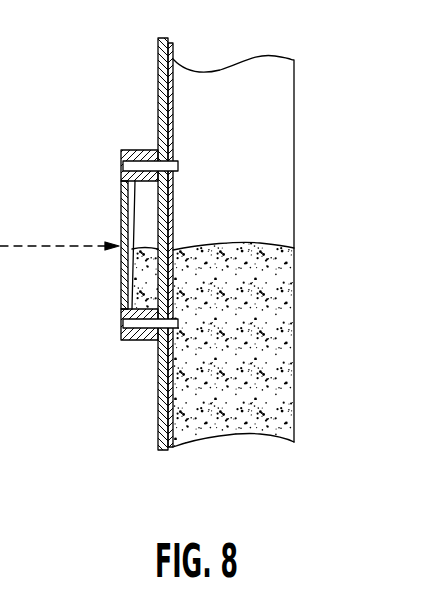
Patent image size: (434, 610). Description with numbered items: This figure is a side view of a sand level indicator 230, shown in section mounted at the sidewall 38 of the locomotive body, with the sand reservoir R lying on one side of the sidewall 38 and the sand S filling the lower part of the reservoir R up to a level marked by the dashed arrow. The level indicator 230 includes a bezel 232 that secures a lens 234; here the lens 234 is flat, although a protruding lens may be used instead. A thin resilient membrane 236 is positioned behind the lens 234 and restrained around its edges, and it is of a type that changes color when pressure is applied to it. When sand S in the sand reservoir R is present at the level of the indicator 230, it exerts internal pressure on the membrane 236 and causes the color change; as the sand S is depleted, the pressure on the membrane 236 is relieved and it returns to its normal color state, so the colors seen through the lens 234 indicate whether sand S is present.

The sidewall 38 is at (158, 78).
The sand reservoir R is at (186, 70).
The sand S is at (234, 337).
The level indicator 230 is at (103, 263).
The thin resilient membrane 236 is at (120, 187).
The lens 234 is at (122, 270).
The bezel 232 is at (133, 341).